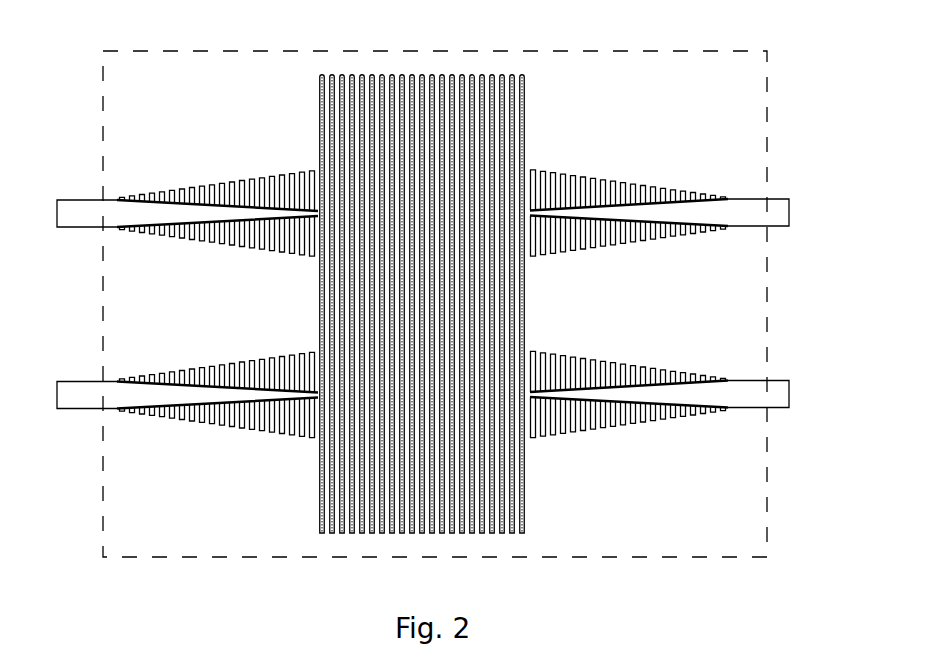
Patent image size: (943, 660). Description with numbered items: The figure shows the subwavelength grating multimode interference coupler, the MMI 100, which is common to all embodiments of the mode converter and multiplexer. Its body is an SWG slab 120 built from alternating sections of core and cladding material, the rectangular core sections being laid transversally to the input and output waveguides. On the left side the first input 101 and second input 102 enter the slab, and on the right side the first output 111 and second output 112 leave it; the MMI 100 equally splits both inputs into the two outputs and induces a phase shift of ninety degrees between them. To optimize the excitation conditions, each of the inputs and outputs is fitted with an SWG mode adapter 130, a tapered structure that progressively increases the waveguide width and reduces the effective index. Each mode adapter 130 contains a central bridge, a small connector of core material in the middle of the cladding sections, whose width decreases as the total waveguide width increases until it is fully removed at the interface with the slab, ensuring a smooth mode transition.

The MMI 100 is at (497, 50).
The first input 101 is at (92, 382).
The second input 102 is at (95, 200).
The first output 111 is at (780, 199).
The second output 112 is at (776, 380).
The SWG slab 120 is at (528, 112).
The SWG mode adapter 130 is at (589, 178).